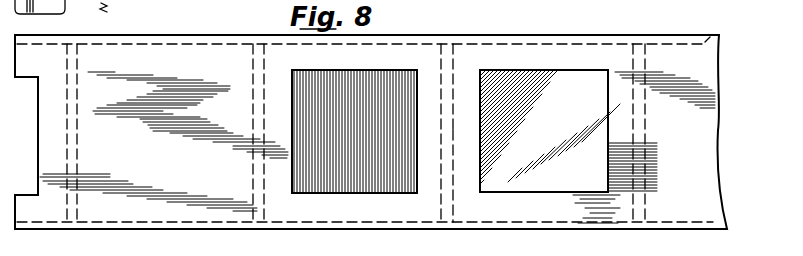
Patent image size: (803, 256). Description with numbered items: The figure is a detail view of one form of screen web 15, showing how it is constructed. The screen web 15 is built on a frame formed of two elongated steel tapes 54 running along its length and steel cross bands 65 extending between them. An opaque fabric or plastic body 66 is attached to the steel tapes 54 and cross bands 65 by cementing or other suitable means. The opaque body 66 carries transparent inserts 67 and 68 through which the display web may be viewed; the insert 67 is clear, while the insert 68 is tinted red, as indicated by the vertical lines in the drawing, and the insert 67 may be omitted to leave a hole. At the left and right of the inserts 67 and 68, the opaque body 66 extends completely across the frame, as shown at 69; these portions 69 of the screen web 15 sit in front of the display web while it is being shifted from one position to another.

The screen web 15 is at (718, 122).
The elongated steel tapes 54 is at (700, 42).
The opaque body portions 69 is at (145, 58).
The transparent insert 68 is at (387, 78).
The opaque body 66 is at (522, 53).
The transparent insert 67 is at (567, 80).
The steel cross bands 65 is at (457, 205).